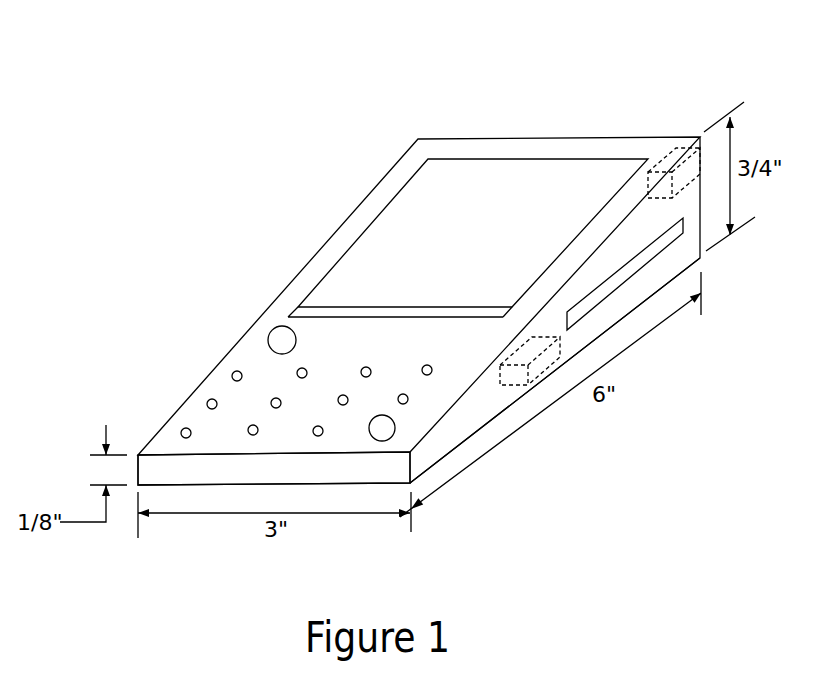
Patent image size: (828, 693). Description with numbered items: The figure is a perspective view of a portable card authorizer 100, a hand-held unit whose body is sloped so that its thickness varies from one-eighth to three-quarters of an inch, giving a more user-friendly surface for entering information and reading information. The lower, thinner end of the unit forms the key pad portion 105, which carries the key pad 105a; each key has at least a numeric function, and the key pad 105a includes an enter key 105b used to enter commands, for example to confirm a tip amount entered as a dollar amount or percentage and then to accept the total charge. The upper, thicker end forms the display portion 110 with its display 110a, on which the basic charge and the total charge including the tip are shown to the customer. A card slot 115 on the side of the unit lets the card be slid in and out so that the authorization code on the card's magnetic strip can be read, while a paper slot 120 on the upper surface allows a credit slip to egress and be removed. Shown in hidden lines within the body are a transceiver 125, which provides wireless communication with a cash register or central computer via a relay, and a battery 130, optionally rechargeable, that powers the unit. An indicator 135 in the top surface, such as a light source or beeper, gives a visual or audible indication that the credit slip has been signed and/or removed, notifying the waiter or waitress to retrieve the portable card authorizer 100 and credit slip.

The portable card authorizer 100 is at (585, 105).
The key pad portion 105 is at (190, 372).
The key pad 105a is at (220, 420).
The enter key 105b is at (395, 430).
The display portion 110 is at (434, 197).
The display 110a is at (487, 205).
The card slot 115 is at (657, 253).
The paper slot 120 is at (347, 305).
The transceiver 125 is at (676, 148).
The battery 130 is at (534, 386).
The indicator 135 is at (271, 331).